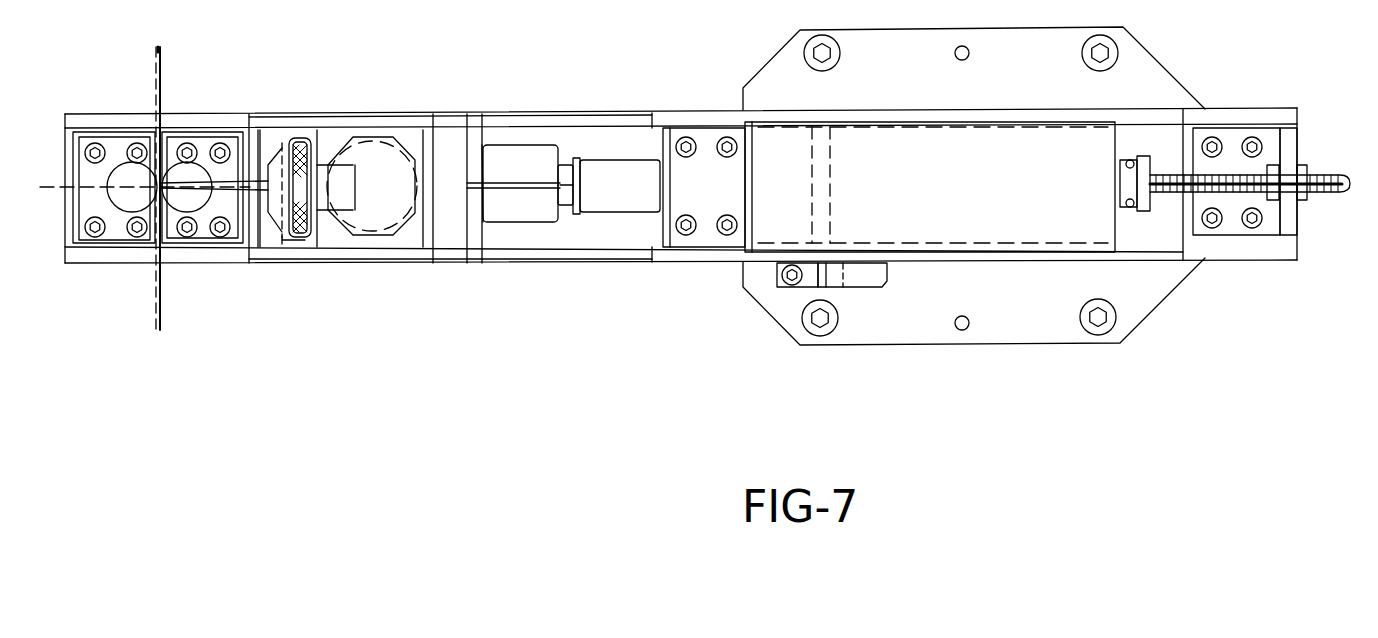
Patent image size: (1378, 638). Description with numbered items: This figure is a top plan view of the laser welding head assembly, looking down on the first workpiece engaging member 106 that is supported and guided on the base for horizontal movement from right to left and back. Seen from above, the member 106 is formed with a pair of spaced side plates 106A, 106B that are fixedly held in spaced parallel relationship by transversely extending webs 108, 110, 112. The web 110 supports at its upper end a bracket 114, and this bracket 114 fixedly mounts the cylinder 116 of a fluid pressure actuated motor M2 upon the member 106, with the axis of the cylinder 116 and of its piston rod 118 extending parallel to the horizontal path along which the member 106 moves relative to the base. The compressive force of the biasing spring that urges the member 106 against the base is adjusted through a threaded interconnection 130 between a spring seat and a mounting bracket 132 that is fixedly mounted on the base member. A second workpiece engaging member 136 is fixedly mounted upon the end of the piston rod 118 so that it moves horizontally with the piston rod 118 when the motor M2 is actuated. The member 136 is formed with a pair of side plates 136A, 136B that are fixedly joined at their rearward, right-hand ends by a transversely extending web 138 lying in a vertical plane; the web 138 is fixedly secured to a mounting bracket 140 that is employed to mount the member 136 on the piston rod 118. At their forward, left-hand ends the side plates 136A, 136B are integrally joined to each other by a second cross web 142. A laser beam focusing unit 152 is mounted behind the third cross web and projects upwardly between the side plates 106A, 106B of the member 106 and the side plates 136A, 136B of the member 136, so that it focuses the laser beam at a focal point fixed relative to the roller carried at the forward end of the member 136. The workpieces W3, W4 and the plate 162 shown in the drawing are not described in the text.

The first workpiece engaging member 106 is at (603, 260).
The side plate 106A is at (678, 258).
The side plate 106B is at (662, 118).
The web 108 is at (625, 154).
The web 110 is at (832, 183).
The web 112 is at (70, 225).
The bracket 114 is at (730, 194).
The cylinder 116 is at (1030, 205).
The piston rod 118 is at (635, 199).
The threaded interconnection 130 is at (1222, 168).
The mounting bracket 132 is at (1290, 220).
The second workpiece engaging member 136 is at (525, 147).
The side plate 136A is at (340, 262).
The side plate 136B is at (350, 118).
The web 138 is at (467, 153).
The mounting bracket 140 is at (513, 212).
The cross web 142 is at (262, 148).
The laser beam focusing unit 152 is at (405, 238).
The base plate 162 is at (1058, 333).
The fluid pressure actuated motor M2 is at (843, 143).
The wire W3 is at (162, 74).
The wire W4 is at (156, 72).